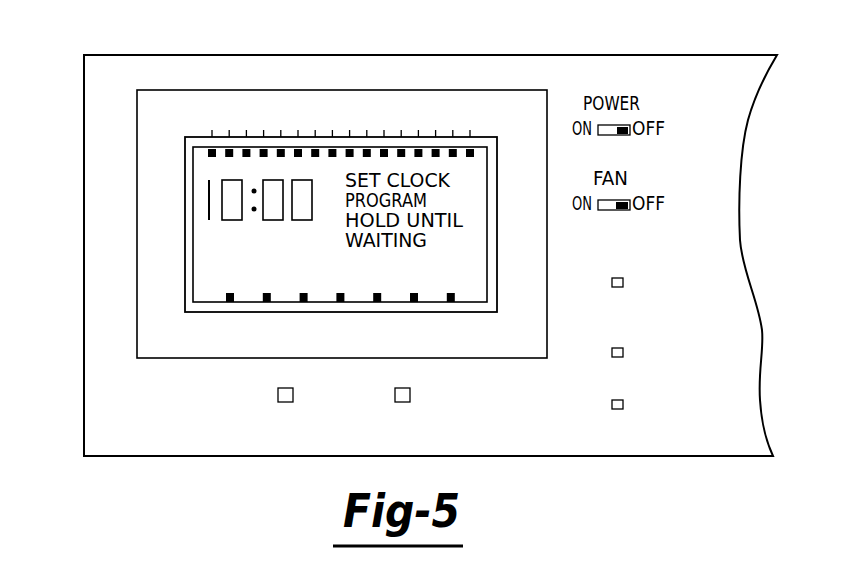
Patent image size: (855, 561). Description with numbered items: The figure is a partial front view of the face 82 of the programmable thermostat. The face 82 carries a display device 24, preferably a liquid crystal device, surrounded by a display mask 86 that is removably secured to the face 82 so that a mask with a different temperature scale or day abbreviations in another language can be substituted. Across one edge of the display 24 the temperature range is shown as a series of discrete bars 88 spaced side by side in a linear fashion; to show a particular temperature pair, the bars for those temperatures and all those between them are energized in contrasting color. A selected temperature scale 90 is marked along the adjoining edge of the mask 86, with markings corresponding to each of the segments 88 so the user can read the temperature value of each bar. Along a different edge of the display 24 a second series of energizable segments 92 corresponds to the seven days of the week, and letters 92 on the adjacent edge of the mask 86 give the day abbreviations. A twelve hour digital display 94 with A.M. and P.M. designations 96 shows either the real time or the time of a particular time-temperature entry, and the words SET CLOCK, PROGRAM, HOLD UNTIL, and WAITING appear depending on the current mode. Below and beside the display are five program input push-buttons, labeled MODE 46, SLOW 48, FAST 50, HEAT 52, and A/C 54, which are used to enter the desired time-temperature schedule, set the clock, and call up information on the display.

The face 82 is at (285, 60).
The display mask 86 is at (150, 115).
The display device 24 is at (200, 293).
The temperature scale 90 is at (312, 127).
The discrete bars 88 is at (228, 157).
The time display digits 94 is at (205, 193).
The A.M. and P.M. designations 96 is at (270, 245).
The day of week segments 92 is at (264, 336).
The push-button 52 is at (294, 394).
The push-button 54 is at (411, 394).
The push-button 46 is at (624, 283).
The push-button 50 is at (624, 354).
The push-button 48 is at (624, 404).